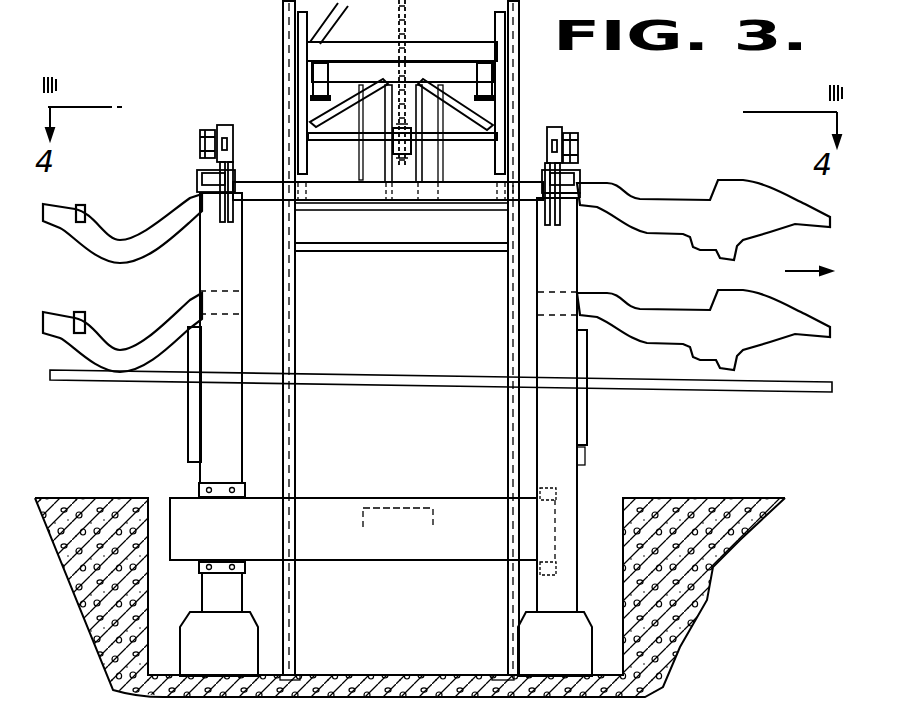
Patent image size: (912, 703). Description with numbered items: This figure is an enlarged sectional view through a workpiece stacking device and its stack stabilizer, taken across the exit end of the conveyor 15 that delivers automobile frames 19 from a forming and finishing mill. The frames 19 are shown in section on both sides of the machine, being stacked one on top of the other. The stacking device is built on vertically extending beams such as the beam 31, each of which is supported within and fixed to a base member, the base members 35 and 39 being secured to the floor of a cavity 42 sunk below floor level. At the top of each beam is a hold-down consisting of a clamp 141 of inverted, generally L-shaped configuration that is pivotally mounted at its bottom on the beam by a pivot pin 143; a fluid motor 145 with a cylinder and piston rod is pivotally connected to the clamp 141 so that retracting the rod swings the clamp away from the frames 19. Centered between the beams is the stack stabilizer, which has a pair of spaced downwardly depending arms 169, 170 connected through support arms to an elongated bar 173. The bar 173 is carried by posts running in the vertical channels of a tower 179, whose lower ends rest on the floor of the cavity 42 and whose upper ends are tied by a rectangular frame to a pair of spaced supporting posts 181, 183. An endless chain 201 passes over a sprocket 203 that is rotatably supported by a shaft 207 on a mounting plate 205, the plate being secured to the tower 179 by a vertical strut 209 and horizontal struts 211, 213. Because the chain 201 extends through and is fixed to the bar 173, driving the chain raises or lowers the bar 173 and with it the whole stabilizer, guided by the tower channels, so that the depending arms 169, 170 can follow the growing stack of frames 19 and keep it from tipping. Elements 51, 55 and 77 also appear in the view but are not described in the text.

The conveyor 15 is at (418, 370).
The automobile frames 19 is at (678, 193).
The beam 31 is at (212, 423).
The base member 35 is at (573, 643).
The base member 39 is at (193, 638).
The cavity 42 is at (626, 517).
The right bracket 51 is at (590, 416).
The left bracket 55 is at (190, 406).
The right column 77 is at (567, 481).
The clamp 141 is at (232, 125).
The pivot pin 143 is at (205, 178).
The motor 145 is at (265, 140).
The downwardly depending arm 169 is at (298, 68).
The downwardly depending arm 170 is at (502, 86).
The elongated bar 173 is at (342, 70).
The tower 179 is at (270, 24).
The supporting post 181 is at (293, 343).
The supporting post 183 is at (508, 341).
The endless chain 201 is at (408, 30).
The sprocket 203 is at (388, 134).
The mounting plate 205 is at (396, 168).
The shaft 207 is at (471, 138).
The vertical strut 209 is at (437, 168).
The horizontal strut 211 is at (468, 83).
The horizontal strut 213 is at (300, 248).